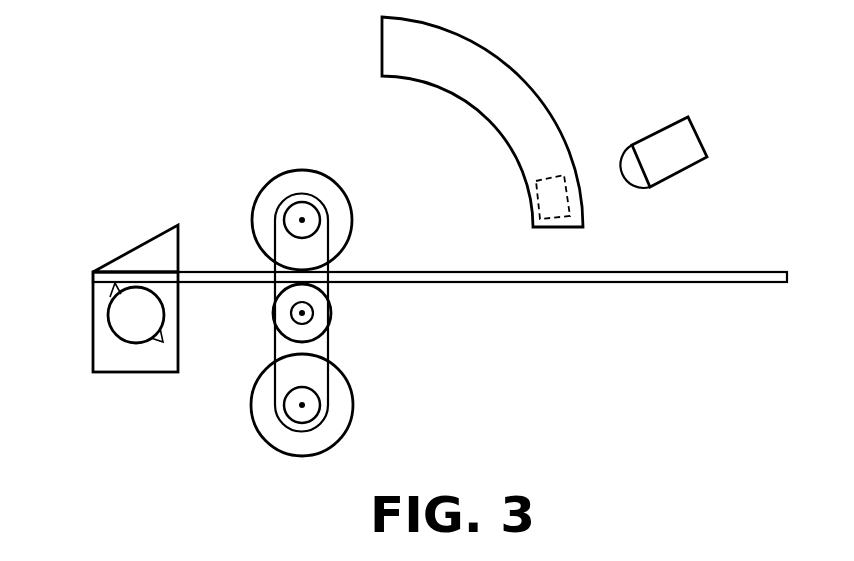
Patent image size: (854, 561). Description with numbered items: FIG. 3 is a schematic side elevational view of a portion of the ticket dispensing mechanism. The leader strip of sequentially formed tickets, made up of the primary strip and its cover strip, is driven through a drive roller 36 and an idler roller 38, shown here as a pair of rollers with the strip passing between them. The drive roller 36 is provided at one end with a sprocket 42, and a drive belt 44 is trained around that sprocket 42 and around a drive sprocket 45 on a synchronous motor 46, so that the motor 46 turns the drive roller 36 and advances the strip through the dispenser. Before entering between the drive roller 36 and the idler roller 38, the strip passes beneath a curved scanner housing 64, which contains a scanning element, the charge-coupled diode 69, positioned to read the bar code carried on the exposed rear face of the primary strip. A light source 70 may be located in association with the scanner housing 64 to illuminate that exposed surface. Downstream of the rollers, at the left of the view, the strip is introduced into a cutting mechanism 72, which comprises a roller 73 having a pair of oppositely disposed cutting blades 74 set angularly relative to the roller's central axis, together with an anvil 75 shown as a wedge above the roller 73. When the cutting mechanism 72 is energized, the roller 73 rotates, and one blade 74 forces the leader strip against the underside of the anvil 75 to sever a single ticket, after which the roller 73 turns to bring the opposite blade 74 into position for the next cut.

The drive roller 36 is at (277, 173).
The idler roller 38 is at (273, 311).
The sprocket 42 is at (318, 193).
The drive belt 44 is at (275, 243).
The drive sprocket 45 is at (300, 405).
The synchronous motor 46 is at (352, 427).
The scanner housing 64 is at (503, 57).
The charge-coupled diode 69 is at (550, 203).
The light source 70 is at (697, 127).
The cutting mechanism 72 is at (82, 231).
The roller 73 is at (117, 327).
The cutting blades 74 is at (113, 288).
The anvil 75 is at (152, 237).